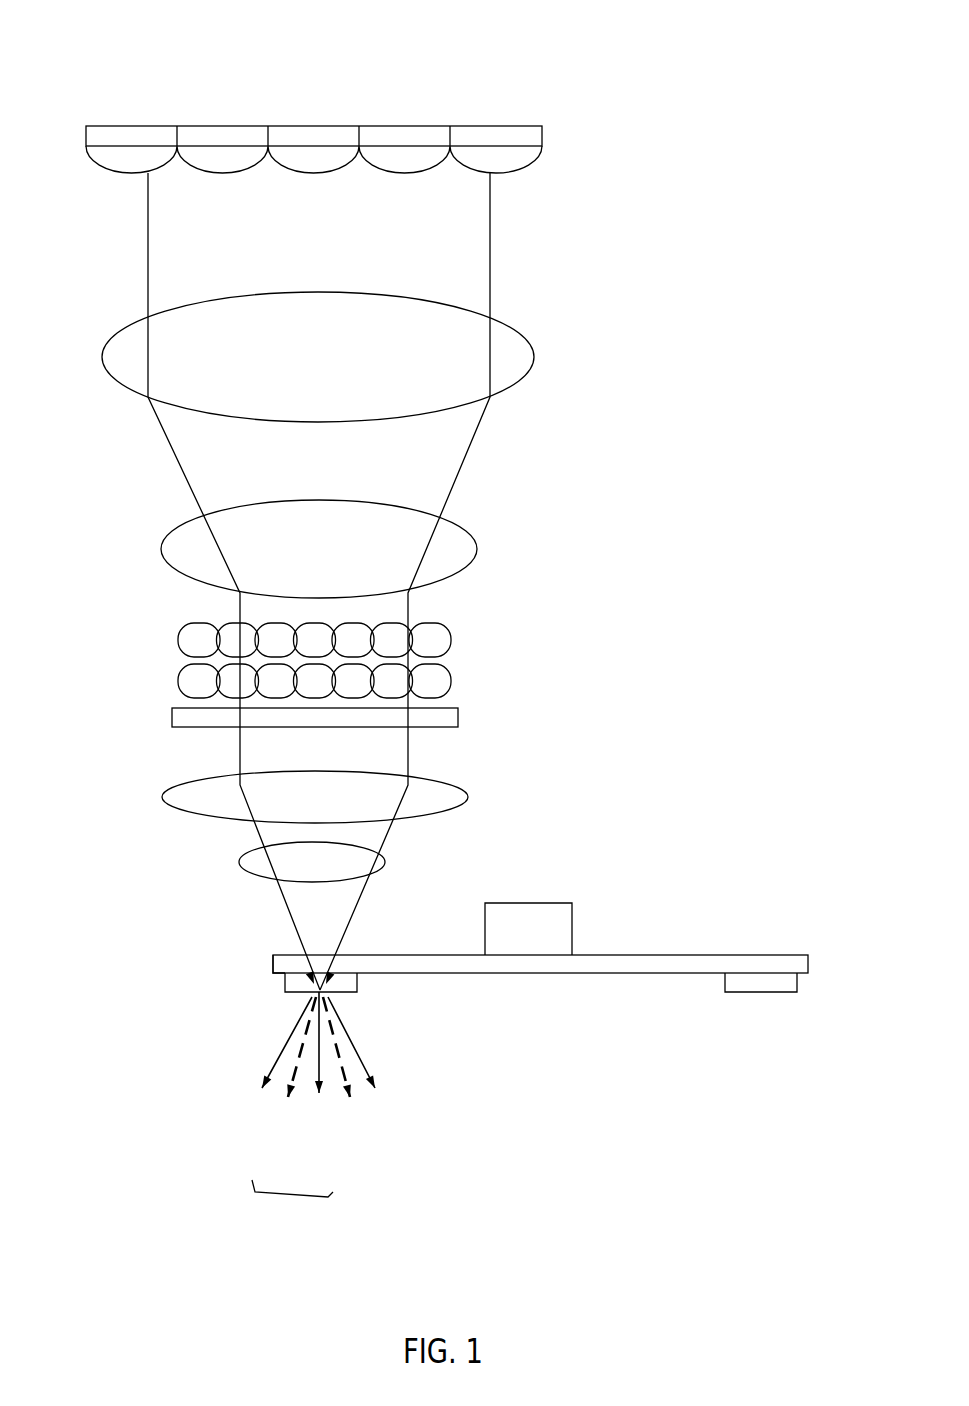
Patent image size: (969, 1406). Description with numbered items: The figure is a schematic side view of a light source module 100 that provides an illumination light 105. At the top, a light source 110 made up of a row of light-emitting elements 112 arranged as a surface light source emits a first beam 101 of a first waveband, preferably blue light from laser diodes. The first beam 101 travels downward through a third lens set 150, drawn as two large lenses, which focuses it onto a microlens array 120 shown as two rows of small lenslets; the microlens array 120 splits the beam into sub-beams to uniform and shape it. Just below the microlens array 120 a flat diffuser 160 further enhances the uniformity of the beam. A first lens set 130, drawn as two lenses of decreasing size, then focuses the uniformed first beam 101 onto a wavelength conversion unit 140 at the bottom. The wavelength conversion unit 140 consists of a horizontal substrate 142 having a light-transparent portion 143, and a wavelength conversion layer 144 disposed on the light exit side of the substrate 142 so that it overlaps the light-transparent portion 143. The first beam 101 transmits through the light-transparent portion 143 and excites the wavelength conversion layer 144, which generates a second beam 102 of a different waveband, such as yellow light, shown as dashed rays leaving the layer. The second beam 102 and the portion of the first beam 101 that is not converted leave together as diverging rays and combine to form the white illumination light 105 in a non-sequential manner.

The light source module 100 is at (80, 25).
The light source 110 is at (517, 135).
The light-emitting elements 112 is at (113, 157).
The first beam 101 is at (490, 214).
The third lens set 150 is at (520, 377).
The microlens array 120 is at (450, 642).
The diffuser 160 is at (455, 718).
The first lens set 130 is at (162, 798).
The wavelength conversion unit 140 is at (621, 935).
The substrate 142 is at (701, 965).
The light-transparent portion 143 is at (282, 963).
The wavelength conversion layer 144 is at (350, 982).
The second beam 102 is at (297, 1070).
The illumination light 105 is at (292, 1206).